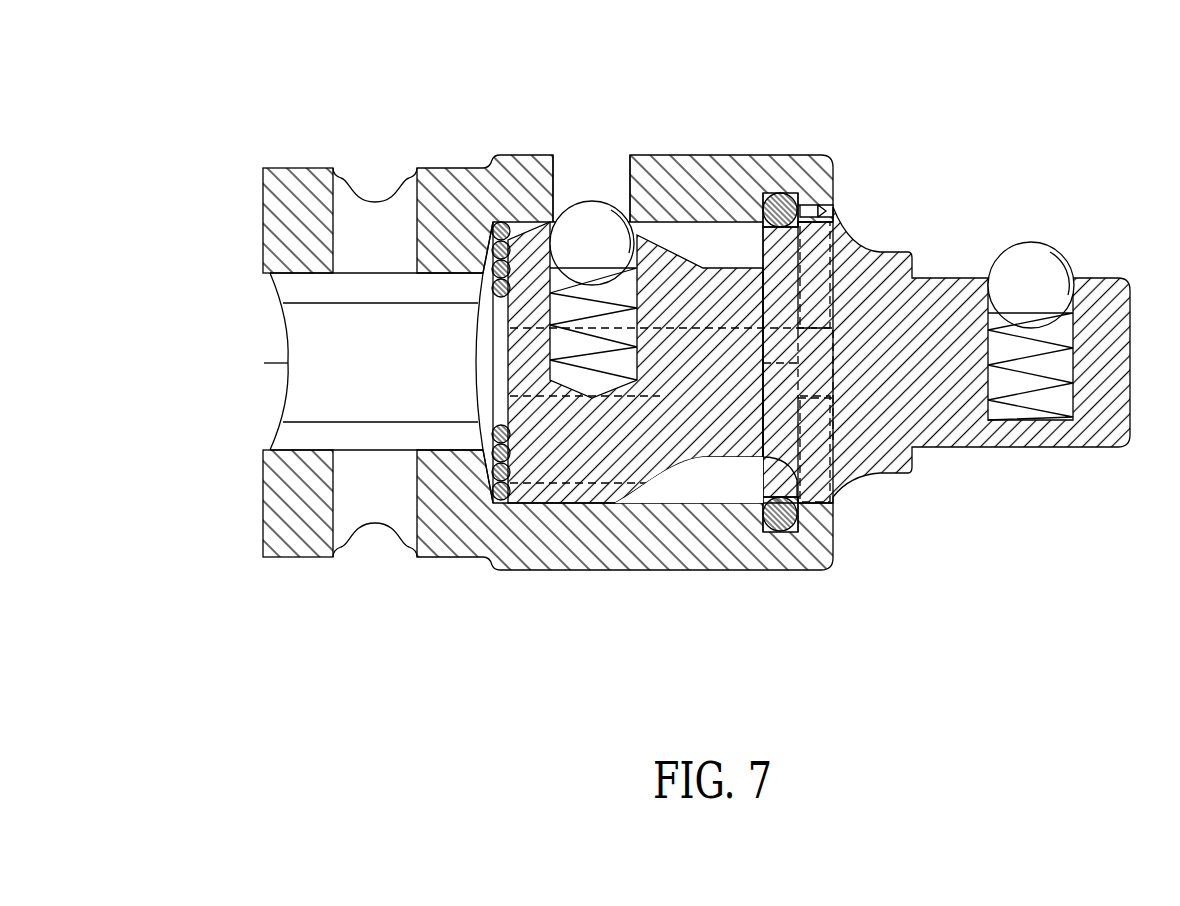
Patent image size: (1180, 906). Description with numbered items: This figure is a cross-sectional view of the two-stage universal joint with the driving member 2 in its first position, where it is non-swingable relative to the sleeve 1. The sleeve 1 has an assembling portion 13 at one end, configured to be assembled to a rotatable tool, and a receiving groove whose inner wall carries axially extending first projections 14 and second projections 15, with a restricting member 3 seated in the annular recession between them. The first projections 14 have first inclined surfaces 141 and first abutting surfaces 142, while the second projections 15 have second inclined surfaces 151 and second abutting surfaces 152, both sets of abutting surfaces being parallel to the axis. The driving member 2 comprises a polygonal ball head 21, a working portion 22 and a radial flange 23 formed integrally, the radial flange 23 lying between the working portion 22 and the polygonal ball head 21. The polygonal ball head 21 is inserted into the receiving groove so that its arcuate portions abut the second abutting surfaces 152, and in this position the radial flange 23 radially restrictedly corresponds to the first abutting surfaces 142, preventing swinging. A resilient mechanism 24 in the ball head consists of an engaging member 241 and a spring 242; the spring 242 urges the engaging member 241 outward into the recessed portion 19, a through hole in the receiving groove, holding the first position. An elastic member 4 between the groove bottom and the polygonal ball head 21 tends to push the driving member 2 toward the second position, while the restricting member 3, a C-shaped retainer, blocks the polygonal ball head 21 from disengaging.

The sleeve 1 is at (462, 156).
The driving member 2 is at (880, 482).
The restricting member 3 is at (832, 563).
The elastic member 4 is at (490, 485).
The assembling portion 13 is at (305, 340).
The first projections 14 is at (987, 67).
The second projections 15 is at (793, 655).
The recessed portion 19 is at (598, 155).
The polygonal ball head 21 is at (587, 473).
The working portion 22 is at (1107, 433).
The radial flange 23 is at (815, 223).
The resilient mechanism 24 is at (793, 63).
The first inclined surfaces 141 is at (832, 208).
The first abutting surfaces 142 is at (812, 208).
The second inclined surfaces 151 is at (760, 503).
The second abutting surfaces 152 is at (698, 503).
The engaging member 241 is at (608, 240).
The spring 242 is at (632, 262).